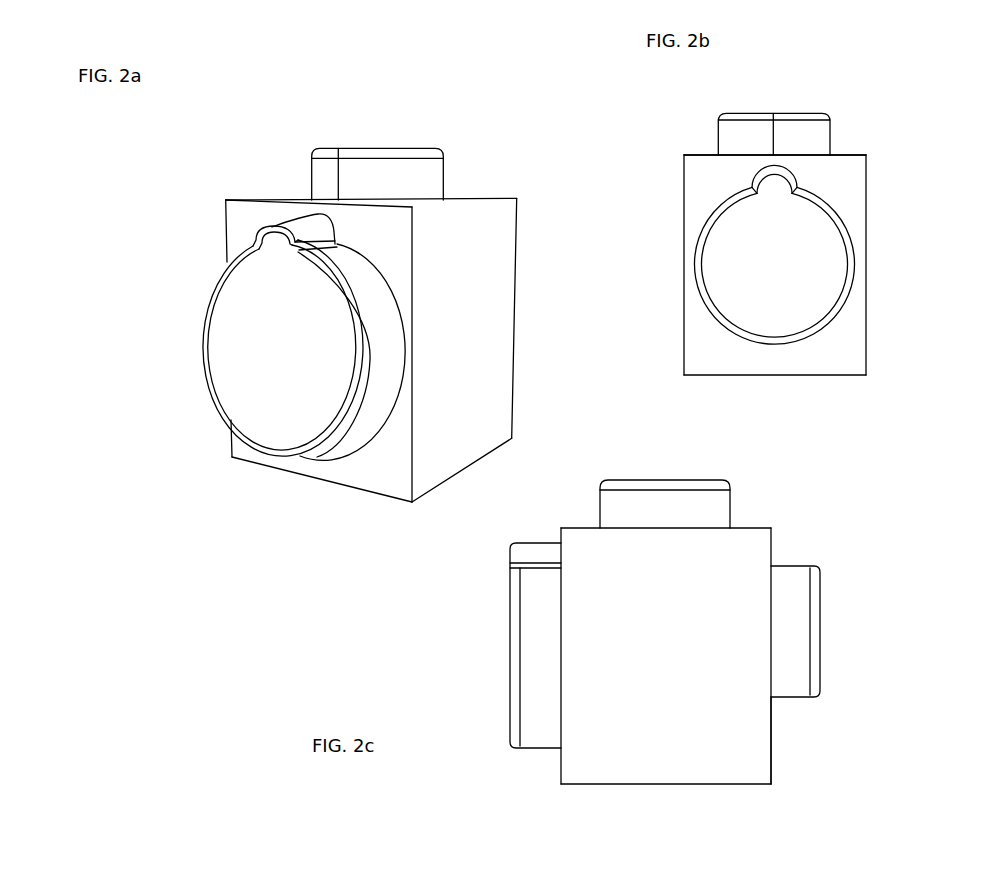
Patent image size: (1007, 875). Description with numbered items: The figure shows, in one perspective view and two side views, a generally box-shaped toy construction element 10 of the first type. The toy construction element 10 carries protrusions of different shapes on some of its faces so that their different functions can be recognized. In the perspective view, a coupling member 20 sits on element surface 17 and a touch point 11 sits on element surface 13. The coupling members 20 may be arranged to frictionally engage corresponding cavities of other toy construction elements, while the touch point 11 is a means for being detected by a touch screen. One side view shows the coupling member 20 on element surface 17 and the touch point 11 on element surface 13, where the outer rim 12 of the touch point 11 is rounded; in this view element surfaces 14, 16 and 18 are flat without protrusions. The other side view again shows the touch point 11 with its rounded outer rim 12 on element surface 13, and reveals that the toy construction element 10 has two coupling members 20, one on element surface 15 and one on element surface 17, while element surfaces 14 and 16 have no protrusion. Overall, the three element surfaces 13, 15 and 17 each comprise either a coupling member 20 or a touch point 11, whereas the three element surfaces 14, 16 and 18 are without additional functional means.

In FIG. 2A, the toy construction element 10 is at (248, 135).
In FIG. 2B, the toy construction element 10 is at (903, 125).
In FIG. 2C, the toy construction element 10 is at (880, 533).
In FIG. 2A, the touch point 11 is at (250, 317).
In FIG. 2B, the touch point 11 is at (825, 227).
In FIG. 2C, the touch point 11 is at (533, 618).
In FIG. 2A, the outer rim 12 is at (304, 337).
In FIG. 2B, the outer rim 12 is at (852, 257).
In FIG. 2C, the outer rim 12 is at (515, 693).
In FIG. 2A, the element surface 13 is at (363, 473).
In FIG. 2B, the element surface 13 is at (845, 183).
In FIG. 2C, the element surface 13 is at (561, 765).
In FIG. 2A, the element surface 14 is at (514, 318).
In FIG. 2B, the element surface 14 is at (866, 317).
In FIG. 2C, the element surface 14 is at (748, 745).
In FIG. 2C, the element surface 15 is at (772, 707).
In FIG. 2A, the element surface 16 is at (372, 470).
In FIG. 2B, the element surface 16 is at (810, 377).
In FIG. 2C, the element surface 16 is at (710, 785).
In FIG. 2A, the element surface 17 is at (452, 198).
In FIG. 2B, the element surface 17 is at (838, 153).
In FIG. 2C, the element surface 17 is at (745, 522).
In FIG. 2B, the element surface 18 is at (684, 243).
In FIG. 2A, the coupling member 20 is at (410, 163).
In FIG. 2B, the coupling member 20 is at (737, 137).
In FIG. 2C, the coupling member 20 is at (688, 505).